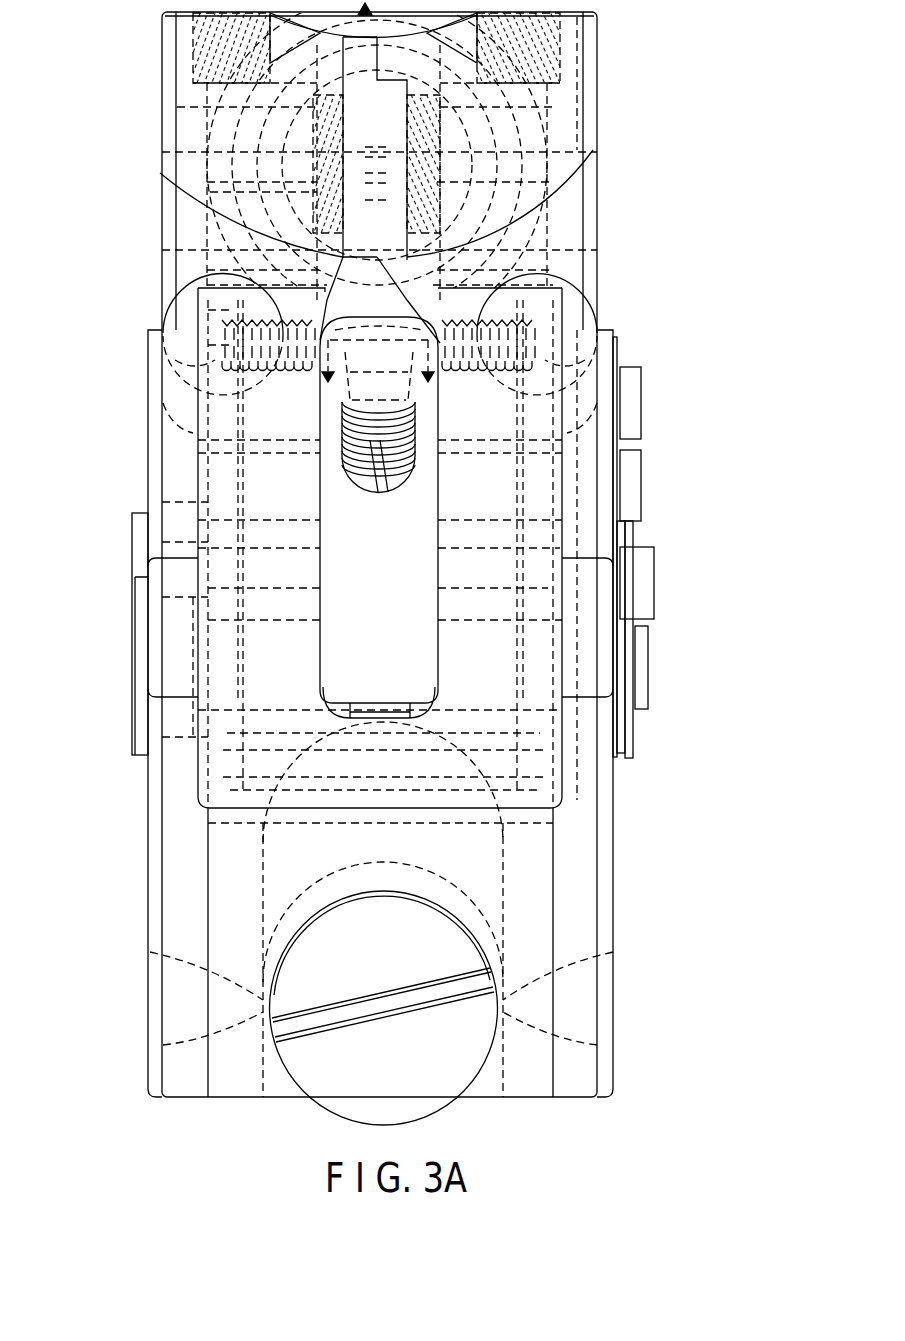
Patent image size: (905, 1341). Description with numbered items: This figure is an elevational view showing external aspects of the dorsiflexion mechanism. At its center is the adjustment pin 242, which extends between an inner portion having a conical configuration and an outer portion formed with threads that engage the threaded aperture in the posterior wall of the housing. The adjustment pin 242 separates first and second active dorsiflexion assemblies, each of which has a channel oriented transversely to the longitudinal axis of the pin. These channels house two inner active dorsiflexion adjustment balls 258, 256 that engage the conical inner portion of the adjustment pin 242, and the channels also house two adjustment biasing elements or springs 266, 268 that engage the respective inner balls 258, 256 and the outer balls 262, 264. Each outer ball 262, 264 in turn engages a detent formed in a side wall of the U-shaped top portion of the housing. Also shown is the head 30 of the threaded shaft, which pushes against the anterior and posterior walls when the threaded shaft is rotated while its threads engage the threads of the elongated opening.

The head 30 is at (353, 1097).
The adjustment pin 242 is at (392, 481).
The inner active dorsiflexion adjustment ball 256 is at (428, 377).
The inner active dorsiflexion adjustment ball 258 is at (328, 376).
The outer ball 262 is at (573, 350).
The outer ball 264 is at (197, 350).
The adjustment biasing element or spring 266 is at (483, 312).
The adjustment biasing element or spring 268 is at (283, 310).